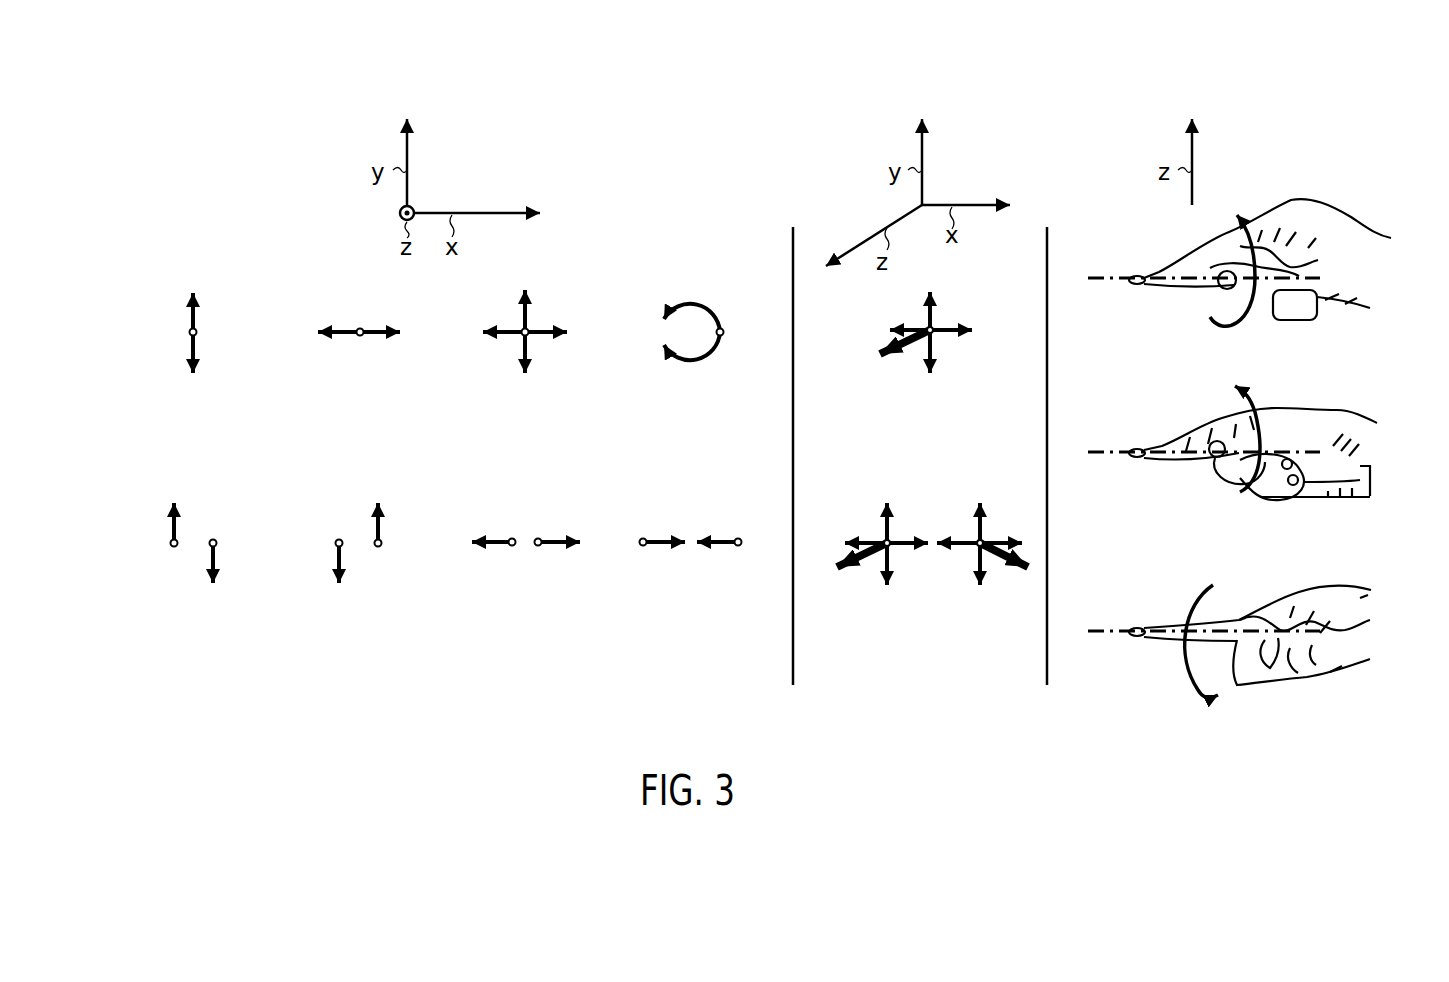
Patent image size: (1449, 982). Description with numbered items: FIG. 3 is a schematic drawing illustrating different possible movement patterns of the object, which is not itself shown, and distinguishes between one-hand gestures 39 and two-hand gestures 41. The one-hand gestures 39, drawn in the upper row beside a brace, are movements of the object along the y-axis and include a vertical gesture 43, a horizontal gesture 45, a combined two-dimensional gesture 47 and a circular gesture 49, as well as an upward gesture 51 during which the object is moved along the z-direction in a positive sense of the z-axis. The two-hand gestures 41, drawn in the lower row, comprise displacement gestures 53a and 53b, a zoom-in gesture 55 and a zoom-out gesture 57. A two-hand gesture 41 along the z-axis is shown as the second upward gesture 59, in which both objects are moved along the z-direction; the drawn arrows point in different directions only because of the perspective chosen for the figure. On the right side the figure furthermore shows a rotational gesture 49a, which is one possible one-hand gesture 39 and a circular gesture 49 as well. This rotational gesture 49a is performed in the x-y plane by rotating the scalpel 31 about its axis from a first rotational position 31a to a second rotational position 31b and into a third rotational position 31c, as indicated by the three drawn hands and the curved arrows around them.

The scalpel 31 is at (1229, 448).
The first rotational position 31a is at (1142, 288).
The second rotational position 31b is at (1142, 461).
The third rotational position 31c is at (1142, 640).
The one-hand gestures 39 is at (138, 263).
The two-hand gestures 41 is at (138, 455).
The vertical gesture 43 is at (195, 316).
The horizontal gesture 45 is at (372, 330).
The combined 2D-gesture 47 is at (527, 318).
The circular gesture 49 is at (662, 313).
The rotational gesture 49a is at (1380, 710).
The upward gesture 51 is at (900, 355).
The displacement gesture 53a is at (206, 523).
The displacement gesture 53b is at (358, 523).
The zoom-in gesture 55 is at (527, 557).
The zoom-out gesture 57 is at (688, 557).
The second upward gesture 59 is at (930, 582).